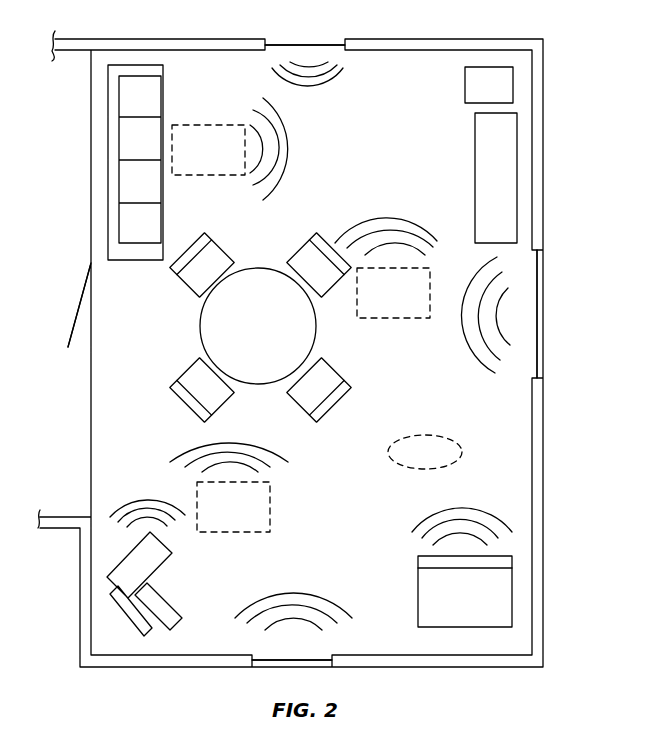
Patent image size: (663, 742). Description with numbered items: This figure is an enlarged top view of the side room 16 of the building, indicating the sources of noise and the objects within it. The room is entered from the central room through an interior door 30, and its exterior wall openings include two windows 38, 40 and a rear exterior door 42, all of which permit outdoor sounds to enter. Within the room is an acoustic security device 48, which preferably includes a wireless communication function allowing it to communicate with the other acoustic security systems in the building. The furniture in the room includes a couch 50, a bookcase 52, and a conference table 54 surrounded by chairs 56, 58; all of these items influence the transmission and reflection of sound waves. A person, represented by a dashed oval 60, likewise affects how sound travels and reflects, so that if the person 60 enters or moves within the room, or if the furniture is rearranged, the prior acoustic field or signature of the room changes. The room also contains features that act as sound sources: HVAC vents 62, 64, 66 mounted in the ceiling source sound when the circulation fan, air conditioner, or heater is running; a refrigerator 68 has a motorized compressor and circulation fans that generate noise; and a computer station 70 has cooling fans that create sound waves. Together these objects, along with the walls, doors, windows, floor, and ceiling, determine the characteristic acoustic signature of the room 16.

The side room 16 is at (515, 477).
The interior door 30 is at (78, 308).
The window 38 is at (262, 666).
The window 40 is at (538, 323).
The rear exterior door 42 is at (335, 44).
The acoustic security device 48 is at (489, 85).
The couch 50 is at (163, 90).
The bookcase 52 is at (475, 175).
The conference table 54 is at (258, 326).
The chairs 56 is at (308, 233).
The chairs 58 is at (310, 421).
The person 60 is at (403, 468).
The HVAC vent 62 is at (176, 177).
The HVAC vent 64 is at (389, 318).
The HVAC vent 66 is at (253, 532).
The refrigerator 68 is at (418, 585).
The computer station 70 is at (163, 583).